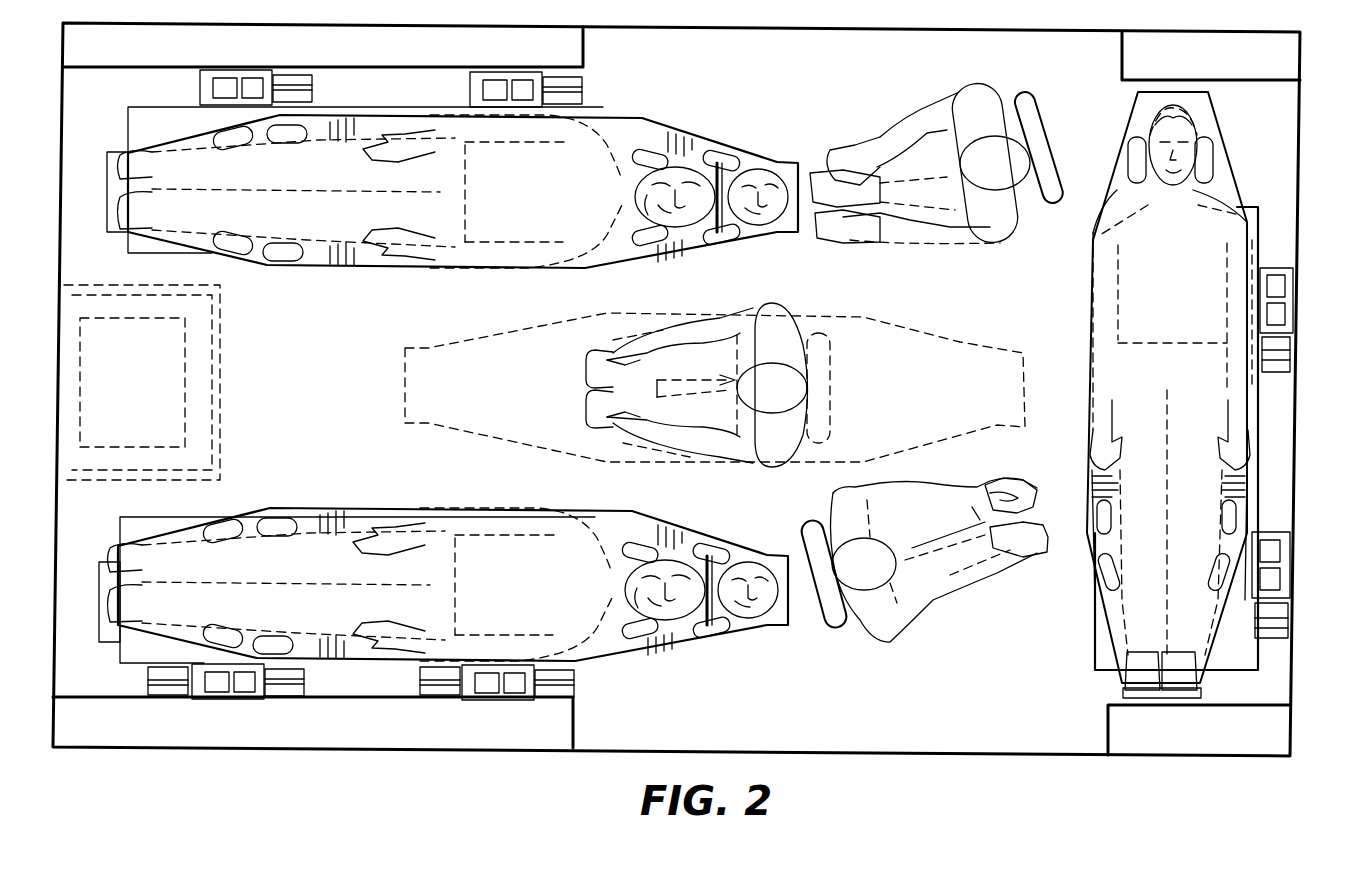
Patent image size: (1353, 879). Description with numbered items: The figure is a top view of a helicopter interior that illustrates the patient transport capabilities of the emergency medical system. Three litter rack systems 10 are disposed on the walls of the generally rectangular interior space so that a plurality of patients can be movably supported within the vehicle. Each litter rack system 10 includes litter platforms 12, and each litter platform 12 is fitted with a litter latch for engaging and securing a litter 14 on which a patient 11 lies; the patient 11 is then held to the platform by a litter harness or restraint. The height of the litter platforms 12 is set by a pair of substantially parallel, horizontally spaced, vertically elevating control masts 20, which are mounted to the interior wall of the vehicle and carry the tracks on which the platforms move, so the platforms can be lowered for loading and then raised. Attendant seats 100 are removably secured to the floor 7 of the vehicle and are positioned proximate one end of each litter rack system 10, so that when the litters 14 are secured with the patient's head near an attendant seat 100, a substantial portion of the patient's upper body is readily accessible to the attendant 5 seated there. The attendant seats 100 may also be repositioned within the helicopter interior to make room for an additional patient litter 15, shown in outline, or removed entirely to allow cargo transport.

The attendant 5 is at (940, 100).
The floor 7 is at (803, 99).
The litter rack system 10 is at (583, 53).
The patient 11 is at (527, 280).
The litter platform 12 is at (197, 253).
The litter 14 is at (300, 268).
The additional patient litter 15 is at (960, 342).
The control mast 20 is at (233, 72).
The attendant seat 100 is at (1033, 123).